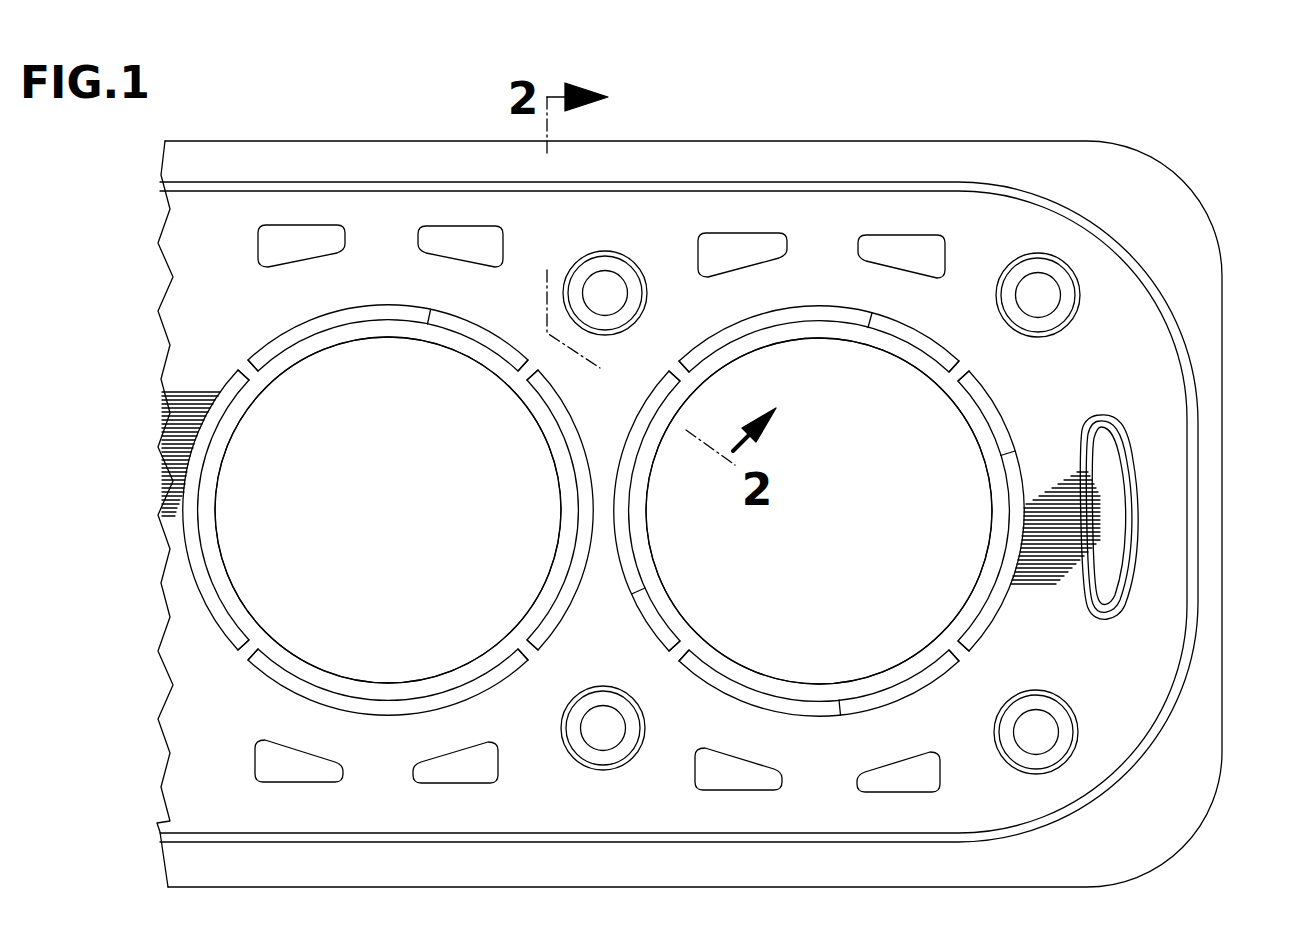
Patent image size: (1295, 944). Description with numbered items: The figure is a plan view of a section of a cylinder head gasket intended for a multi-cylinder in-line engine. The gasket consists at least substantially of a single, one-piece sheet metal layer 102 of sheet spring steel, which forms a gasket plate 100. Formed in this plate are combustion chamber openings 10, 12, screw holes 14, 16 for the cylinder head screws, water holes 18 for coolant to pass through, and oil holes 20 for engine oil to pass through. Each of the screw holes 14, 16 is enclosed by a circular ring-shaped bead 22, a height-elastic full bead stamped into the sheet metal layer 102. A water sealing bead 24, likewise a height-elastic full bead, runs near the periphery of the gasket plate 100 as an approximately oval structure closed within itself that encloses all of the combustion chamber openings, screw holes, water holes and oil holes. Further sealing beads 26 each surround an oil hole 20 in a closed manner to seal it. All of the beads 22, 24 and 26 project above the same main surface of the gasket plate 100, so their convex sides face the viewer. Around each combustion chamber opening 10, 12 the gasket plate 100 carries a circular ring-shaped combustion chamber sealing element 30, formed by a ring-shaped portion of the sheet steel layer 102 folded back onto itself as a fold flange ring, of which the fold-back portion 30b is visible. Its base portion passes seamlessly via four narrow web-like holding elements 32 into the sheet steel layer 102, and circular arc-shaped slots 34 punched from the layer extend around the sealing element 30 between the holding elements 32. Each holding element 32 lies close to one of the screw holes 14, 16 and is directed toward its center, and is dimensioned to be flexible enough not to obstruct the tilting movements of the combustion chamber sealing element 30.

The gasket plate 100 is at (934, 125).
The sheet metal layer 102 is at (193, 313).
The combustion chamber opening 10 is at (819, 511).
The combustion chamber opening 12 is at (388, 510).
The screw hole 14 is at (1032, 302).
The screw hole 16 is at (600, 294).
The water hole 18 is at (285, 267).
The oil hole 20 is at (1105, 615).
The circular ring-shaped bead 22 is at (646, 292).
The water sealing bead 24 is at (1192, 455).
The sealing bead 26 is at (1140, 517).
The combustion chamber sealing element 30 is at (542, 579).
The fold-back portion 30b is at (212, 468).
The holding element 32 is at (516, 385).
The circular arc-shaped slot 34 is at (430, 318).